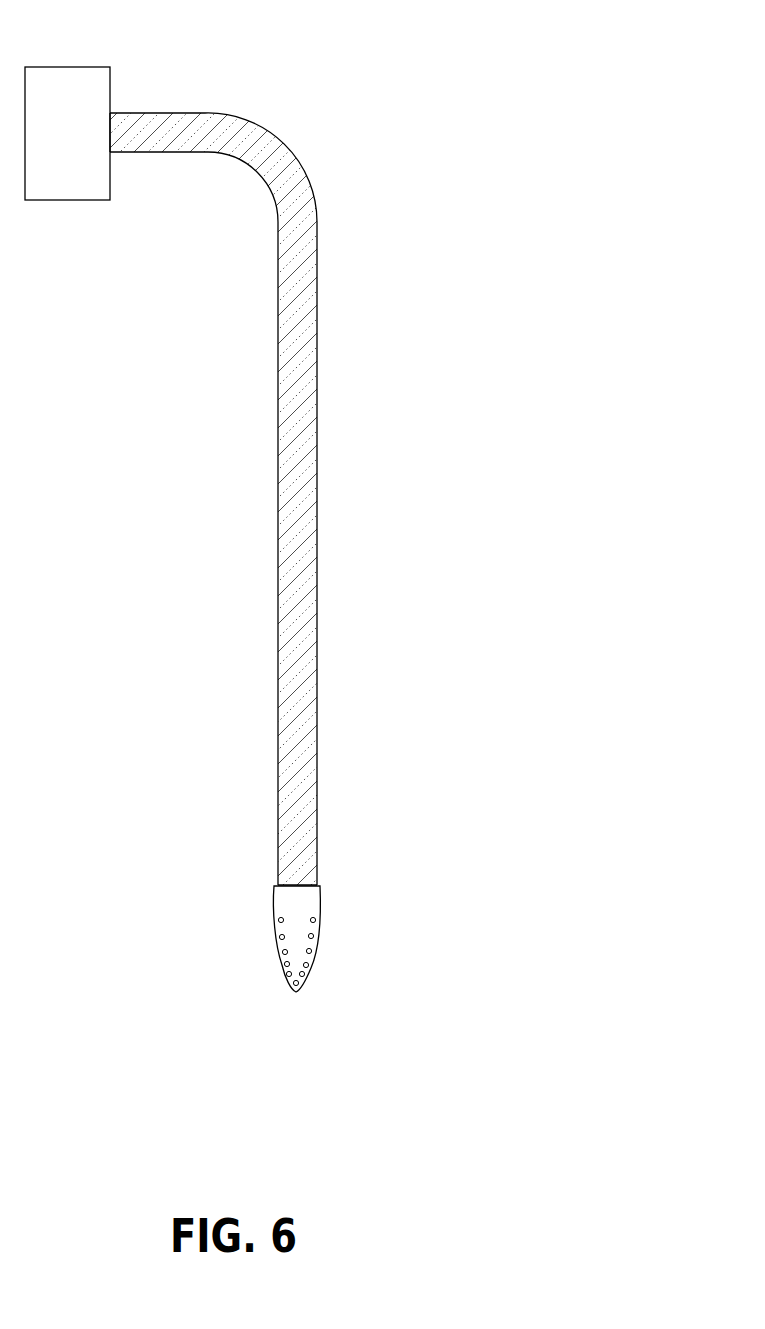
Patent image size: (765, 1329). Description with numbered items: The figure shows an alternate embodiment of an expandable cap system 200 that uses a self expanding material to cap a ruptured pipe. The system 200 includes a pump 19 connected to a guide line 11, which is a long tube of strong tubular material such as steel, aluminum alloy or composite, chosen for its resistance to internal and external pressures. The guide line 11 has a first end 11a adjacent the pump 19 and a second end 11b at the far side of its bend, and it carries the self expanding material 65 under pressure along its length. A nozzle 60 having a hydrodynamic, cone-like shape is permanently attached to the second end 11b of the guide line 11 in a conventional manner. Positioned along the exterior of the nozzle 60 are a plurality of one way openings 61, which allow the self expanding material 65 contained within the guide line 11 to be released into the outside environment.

The expandable cap system 200 is at (346, 119).
The pump 19 is at (53, 146).
The guide line 11 is at (319, 309).
The first end 11a is at (112, 128).
The second end 11b is at (297, 883).
The self expanding material 65 is at (298, 535).
The nozzle 60 is at (305, 905).
The one way openings 61 is at (315, 952).